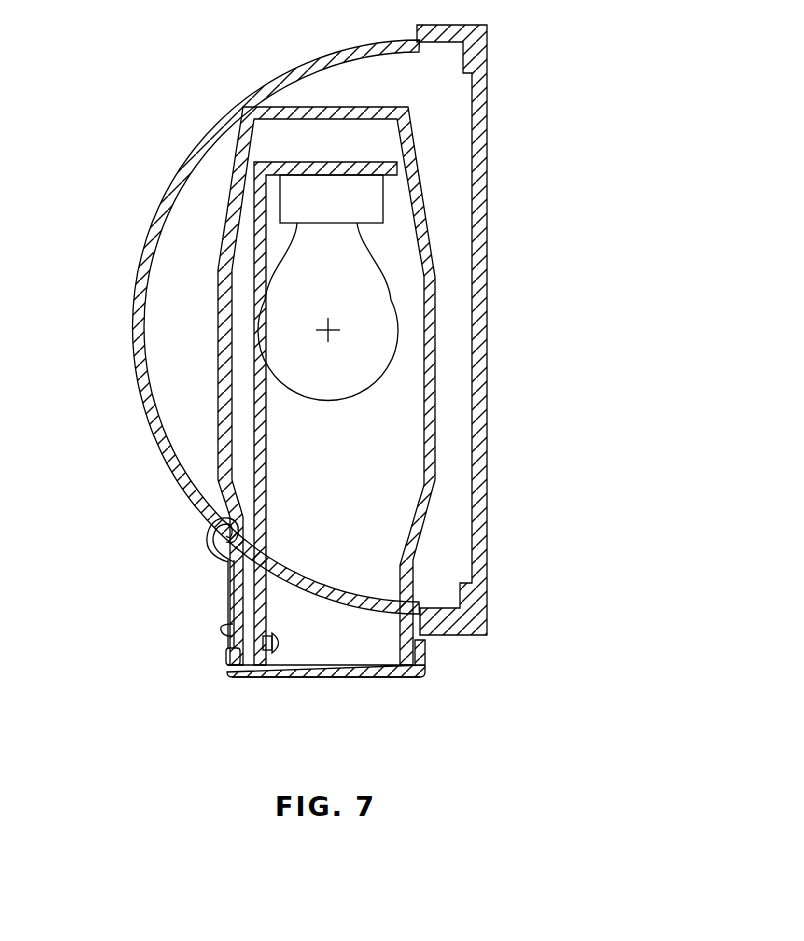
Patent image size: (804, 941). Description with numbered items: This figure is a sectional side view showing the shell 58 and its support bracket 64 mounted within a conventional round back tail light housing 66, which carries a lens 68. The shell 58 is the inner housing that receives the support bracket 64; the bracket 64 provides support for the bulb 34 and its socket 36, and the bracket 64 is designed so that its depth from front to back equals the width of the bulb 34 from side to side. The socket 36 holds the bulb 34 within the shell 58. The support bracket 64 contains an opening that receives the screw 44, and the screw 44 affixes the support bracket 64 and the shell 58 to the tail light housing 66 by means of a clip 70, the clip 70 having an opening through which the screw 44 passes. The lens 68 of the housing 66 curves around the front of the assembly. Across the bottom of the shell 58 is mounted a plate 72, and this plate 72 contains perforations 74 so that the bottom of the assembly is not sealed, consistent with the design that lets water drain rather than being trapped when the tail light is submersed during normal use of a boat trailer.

The lens 68 is at (480, 148).
The tail light housing 66 is at (133, 258).
The shell 58 is at (433, 413).
The support bracket 64 is at (258, 442).
The socket 36 is at (352, 197).
The bulb 34 is at (372, 330).
The clip 70 is at (230, 598).
The screw 44 is at (282, 643).
The plate 72 is at (425, 668).
The perforations 74 is at (275, 677).